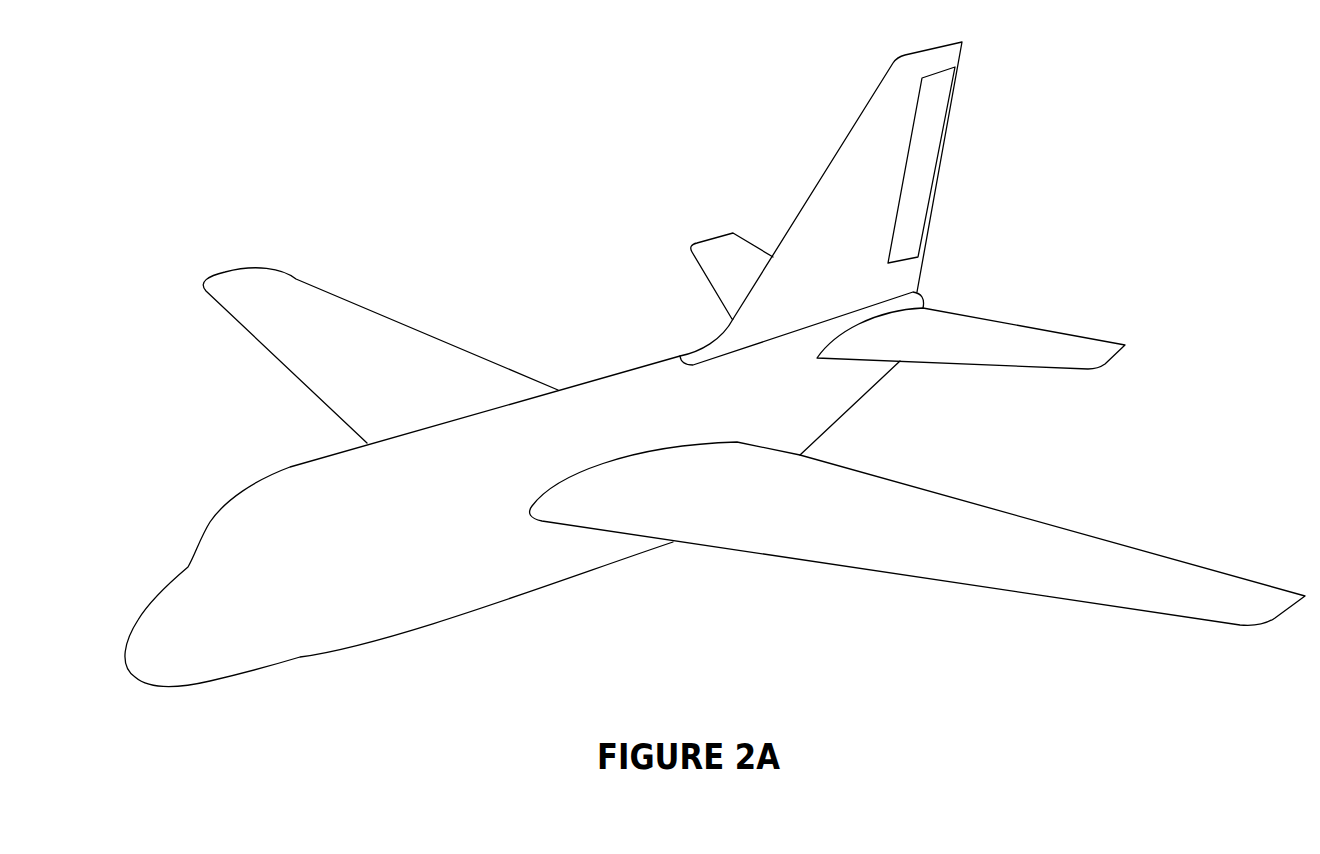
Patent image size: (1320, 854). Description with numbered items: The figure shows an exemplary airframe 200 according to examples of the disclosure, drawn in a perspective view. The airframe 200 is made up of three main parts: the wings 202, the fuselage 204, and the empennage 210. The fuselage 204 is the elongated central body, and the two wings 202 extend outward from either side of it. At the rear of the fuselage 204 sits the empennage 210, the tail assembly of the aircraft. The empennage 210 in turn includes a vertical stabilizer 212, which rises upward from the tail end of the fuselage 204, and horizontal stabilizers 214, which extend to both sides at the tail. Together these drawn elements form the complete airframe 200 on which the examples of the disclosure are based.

The airframe 200 is at (244, 168).
The wings 202 is at (301, 280).
The fuselage 204 is at (447, 623).
The empennage 210 is at (830, 127).
The vertical stabilizer 212 is at (942, 153).
The horizontal stabilizers 214 is at (692, 243).